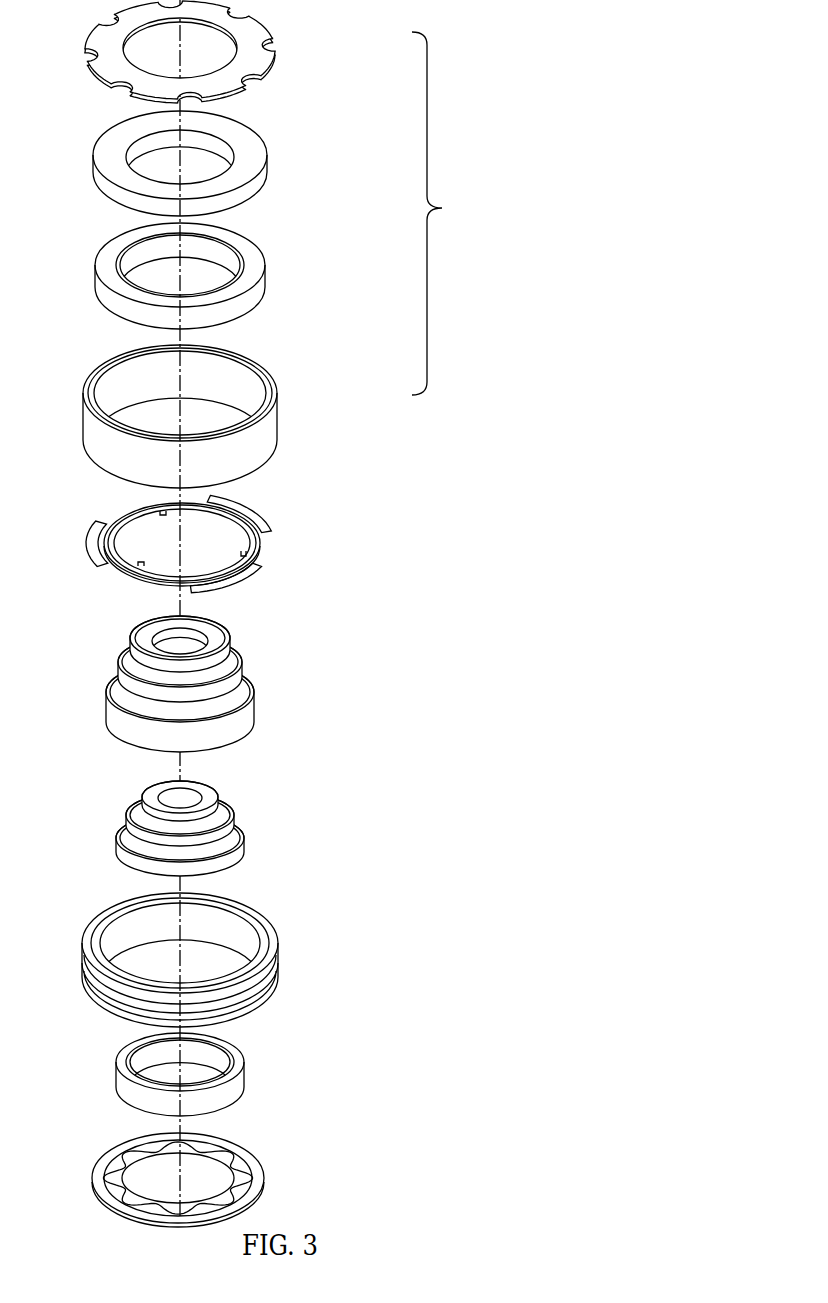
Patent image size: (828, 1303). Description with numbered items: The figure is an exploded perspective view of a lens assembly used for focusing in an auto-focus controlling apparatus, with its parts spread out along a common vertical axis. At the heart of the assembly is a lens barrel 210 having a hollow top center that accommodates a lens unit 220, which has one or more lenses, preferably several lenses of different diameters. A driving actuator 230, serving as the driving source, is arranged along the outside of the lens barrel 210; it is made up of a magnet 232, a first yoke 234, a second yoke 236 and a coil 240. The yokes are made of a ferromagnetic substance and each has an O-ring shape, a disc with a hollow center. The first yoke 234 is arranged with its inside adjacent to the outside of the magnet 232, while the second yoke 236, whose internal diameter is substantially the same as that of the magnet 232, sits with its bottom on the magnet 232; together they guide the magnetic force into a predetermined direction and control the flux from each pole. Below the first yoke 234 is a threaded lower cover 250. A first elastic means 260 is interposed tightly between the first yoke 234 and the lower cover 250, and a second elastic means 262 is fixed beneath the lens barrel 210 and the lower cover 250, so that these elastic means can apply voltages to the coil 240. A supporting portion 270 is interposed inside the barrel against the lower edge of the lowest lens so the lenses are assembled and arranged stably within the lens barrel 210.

The second yoke 236 is at (275, 53).
The magnet 232 is at (268, 163).
The coil 240 is at (267, 284).
The first yoke 234 is at (279, 426).
The driving actuator 230 is at (447, 213).
The first elastic means 260 is at (263, 545).
The lens barrel 210 is at (256, 698).
The lens unit 220 is at (247, 838).
The lower cover 250 is at (277, 953).
The supporting portion 270 is at (246, 1077).
The second elastic means 262 is at (265, 1178).